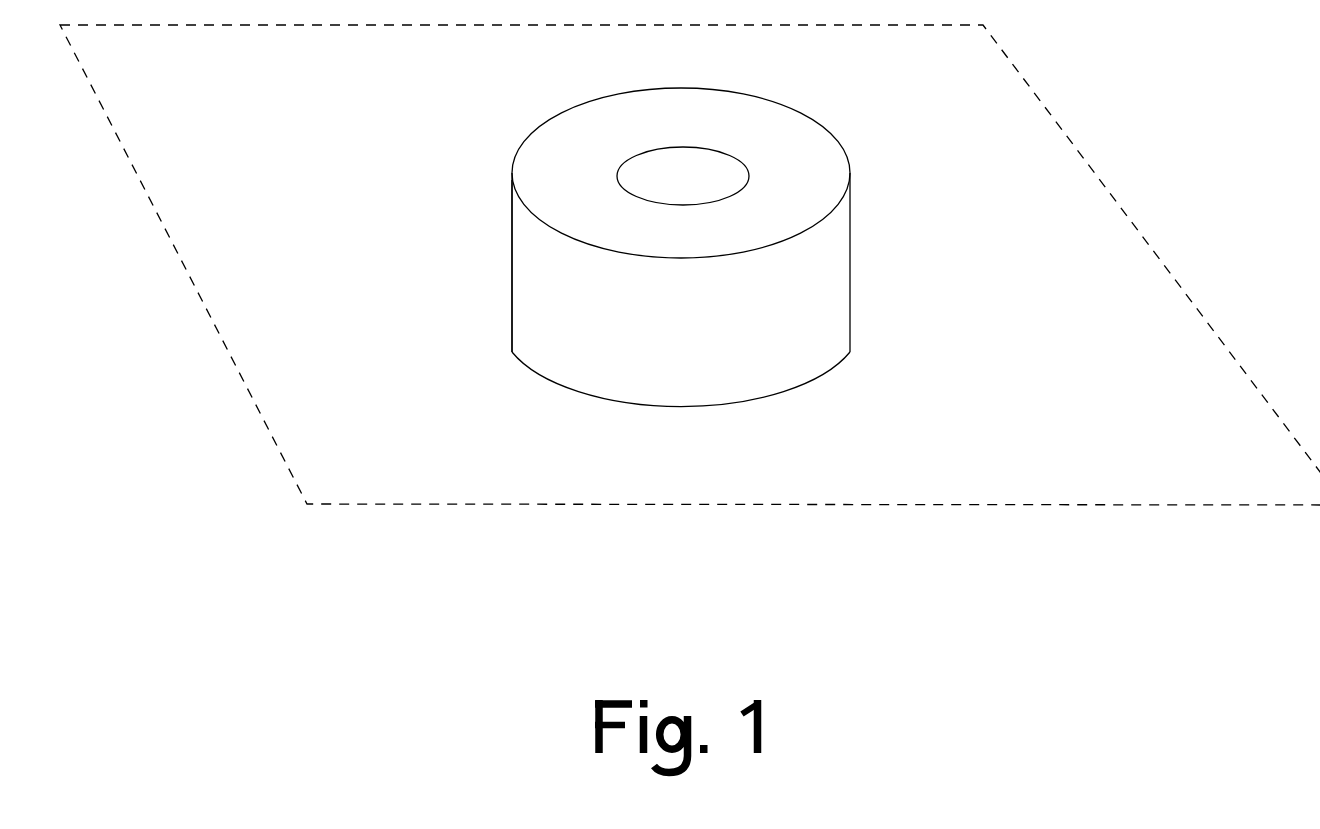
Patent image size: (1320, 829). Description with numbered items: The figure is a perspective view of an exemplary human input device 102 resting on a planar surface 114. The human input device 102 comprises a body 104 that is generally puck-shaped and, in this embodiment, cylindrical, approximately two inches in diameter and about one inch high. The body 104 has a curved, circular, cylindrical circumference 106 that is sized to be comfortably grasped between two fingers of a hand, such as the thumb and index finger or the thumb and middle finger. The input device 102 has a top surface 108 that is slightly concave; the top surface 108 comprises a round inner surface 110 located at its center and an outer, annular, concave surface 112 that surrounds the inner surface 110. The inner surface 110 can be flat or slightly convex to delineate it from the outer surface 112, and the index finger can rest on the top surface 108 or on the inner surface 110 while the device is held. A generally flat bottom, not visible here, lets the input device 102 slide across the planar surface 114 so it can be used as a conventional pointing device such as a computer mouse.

The human input device 102 is at (547, 313).
The body 104 is at (512, 236).
The circumference 106 is at (638, 364).
The top surface 108 is at (573, 135).
The inner surface 110 is at (705, 163).
The outer surface 112 is at (823, 183).
The planar surface 114 is at (527, 502).